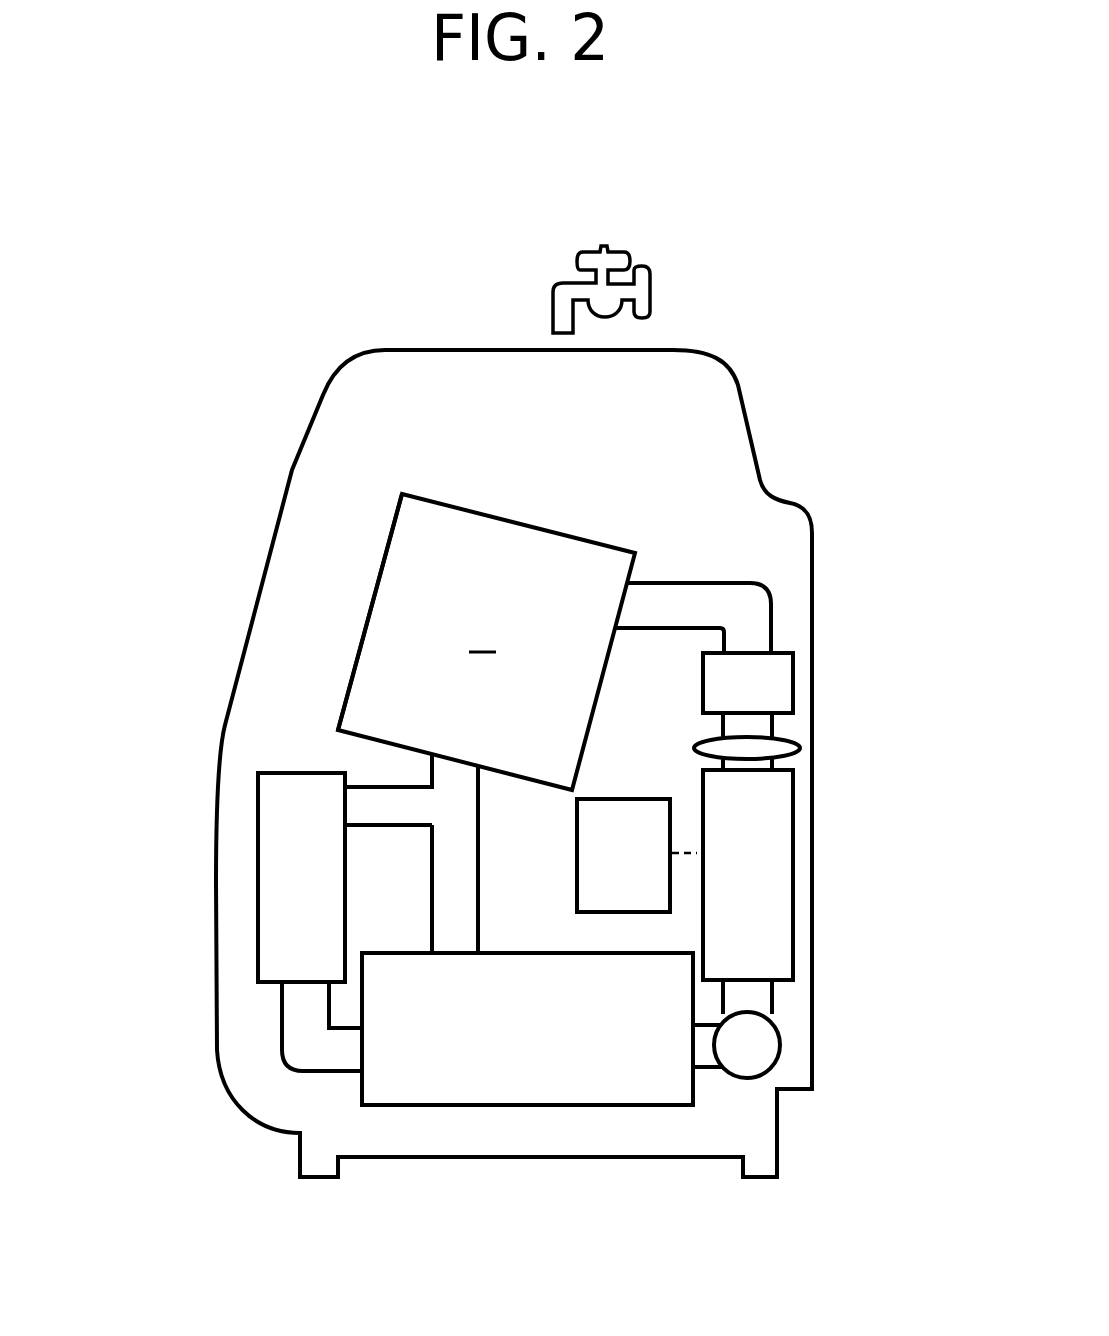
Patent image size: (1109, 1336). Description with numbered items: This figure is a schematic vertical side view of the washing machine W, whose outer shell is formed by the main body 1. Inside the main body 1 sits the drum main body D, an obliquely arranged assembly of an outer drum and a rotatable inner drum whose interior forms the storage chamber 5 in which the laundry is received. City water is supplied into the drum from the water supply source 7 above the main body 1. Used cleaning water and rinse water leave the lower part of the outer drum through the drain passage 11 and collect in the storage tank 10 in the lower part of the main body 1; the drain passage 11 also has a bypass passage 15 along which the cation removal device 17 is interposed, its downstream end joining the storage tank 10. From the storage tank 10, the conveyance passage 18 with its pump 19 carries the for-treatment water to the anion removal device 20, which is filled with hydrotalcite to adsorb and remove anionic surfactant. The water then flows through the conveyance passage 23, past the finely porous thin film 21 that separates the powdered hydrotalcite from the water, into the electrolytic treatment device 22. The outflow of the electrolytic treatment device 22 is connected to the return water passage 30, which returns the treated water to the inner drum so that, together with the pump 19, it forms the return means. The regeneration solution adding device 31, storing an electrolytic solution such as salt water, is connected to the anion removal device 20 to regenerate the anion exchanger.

The main body 1 is at (418, 348).
The water supply source 7 is at (565, 288).
The washing machine W is at (850, 281).
The storage chamber 5 is at (486, 642).
The drum main body D is at (372, 597).
The return water passage 30 is at (707, 592).
The electrolytic treatment device 22 is at (780, 660).
The conveyance passage 23 is at (775, 727).
The finely porous thin film 21 is at (800, 745).
The anion removal device 20 is at (780, 847).
The regeneration solution adding device 31 is at (655, 887).
The pump 19 is at (770, 1045).
The conveyance passage 18 is at (708, 1062).
The storage tank 10 is at (450, 1087).
The drain passage 11 is at (482, 919).
The bypass passage 15 is at (378, 785).
The cation removal device 17 is at (275, 886).